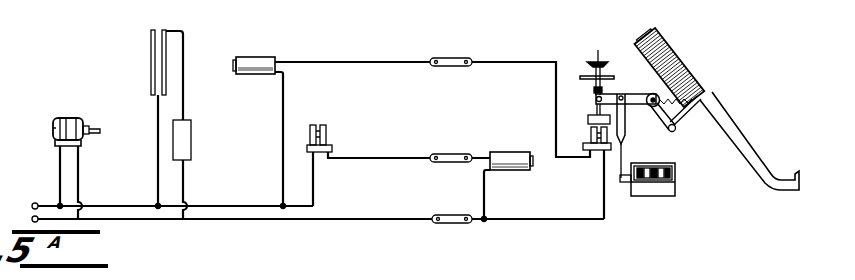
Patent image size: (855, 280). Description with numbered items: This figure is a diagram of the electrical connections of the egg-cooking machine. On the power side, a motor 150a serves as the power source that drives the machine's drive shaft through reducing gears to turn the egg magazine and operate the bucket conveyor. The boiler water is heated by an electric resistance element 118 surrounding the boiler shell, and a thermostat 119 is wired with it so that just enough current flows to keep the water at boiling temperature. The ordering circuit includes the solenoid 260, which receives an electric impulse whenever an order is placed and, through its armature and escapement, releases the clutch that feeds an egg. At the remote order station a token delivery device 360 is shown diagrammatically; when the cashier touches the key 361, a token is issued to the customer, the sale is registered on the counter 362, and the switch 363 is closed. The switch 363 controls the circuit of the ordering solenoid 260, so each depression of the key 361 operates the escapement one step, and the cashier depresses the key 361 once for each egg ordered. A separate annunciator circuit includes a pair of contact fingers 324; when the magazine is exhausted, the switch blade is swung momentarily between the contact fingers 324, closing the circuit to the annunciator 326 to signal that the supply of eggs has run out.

The motor 150a is at (68, 118).
The electric resistance element 118 is at (166, 60).
The thermostat 119 is at (191, 141).
The solenoid 260 is at (262, 57).
The contact fingers 324 is at (326, 130).
The annunciator 326 is at (512, 152).
The token delivery device 360 is at (716, 87).
The key 361 is at (598, 60).
The counter 362 is at (655, 187).
The switch 363 is at (590, 132).